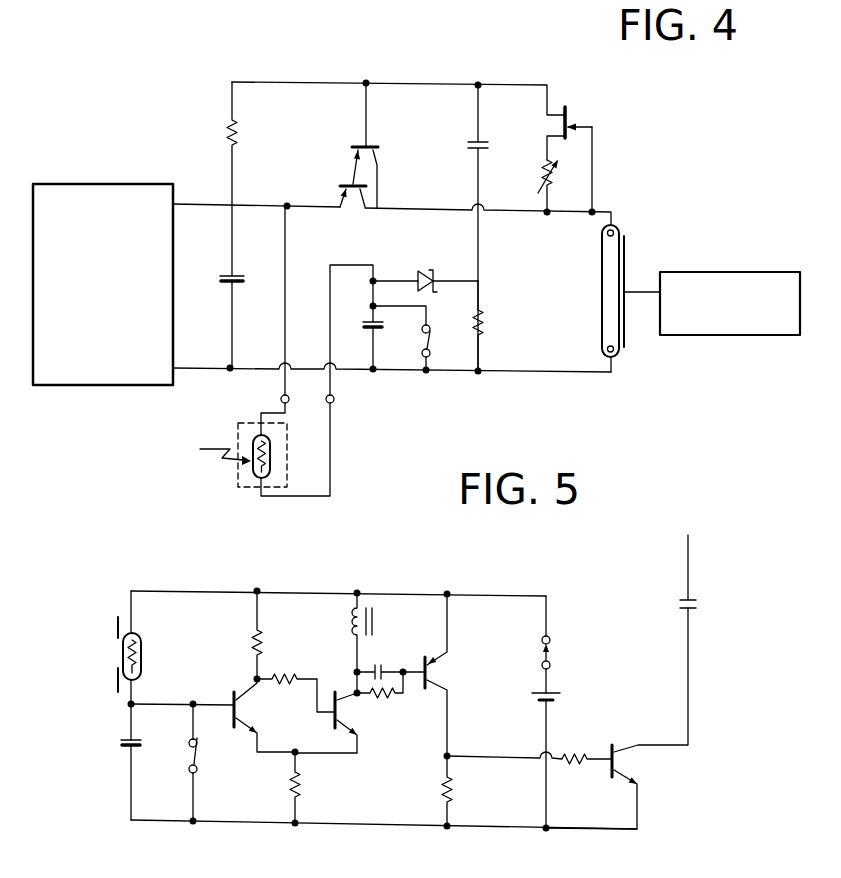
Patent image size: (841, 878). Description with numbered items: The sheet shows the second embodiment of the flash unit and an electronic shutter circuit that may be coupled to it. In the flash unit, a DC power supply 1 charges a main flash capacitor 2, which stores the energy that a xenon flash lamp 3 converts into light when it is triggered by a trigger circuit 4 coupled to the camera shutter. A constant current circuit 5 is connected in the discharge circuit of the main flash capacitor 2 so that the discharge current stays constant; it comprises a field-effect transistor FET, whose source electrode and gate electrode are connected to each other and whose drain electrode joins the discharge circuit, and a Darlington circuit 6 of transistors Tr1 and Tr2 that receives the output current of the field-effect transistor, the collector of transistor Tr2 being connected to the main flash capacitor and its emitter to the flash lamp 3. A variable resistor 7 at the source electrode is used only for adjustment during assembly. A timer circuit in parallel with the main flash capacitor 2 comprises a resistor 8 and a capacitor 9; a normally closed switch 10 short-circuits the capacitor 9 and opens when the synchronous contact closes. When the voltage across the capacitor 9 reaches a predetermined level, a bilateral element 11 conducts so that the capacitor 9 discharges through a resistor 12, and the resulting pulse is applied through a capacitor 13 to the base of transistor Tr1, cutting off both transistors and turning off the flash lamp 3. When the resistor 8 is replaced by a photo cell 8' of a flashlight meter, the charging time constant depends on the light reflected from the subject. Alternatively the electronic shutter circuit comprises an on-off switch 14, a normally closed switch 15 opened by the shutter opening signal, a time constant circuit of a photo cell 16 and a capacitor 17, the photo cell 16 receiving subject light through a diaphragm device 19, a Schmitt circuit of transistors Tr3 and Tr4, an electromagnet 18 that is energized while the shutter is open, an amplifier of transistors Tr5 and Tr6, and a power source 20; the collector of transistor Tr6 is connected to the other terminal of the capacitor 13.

In FIG. 4, the DC power supply 1 is at (91, 184).
In FIG. 4, the main flash capacitor 2 is at (218, 277).
In FIG. 4, the xenon-lamp 3 is at (616, 239).
In FIG. 4, the trigger circuit 4 is at (724, 272).
In FIG. 4, the constant current circuit 5 is at (243, 98).
In FIG. 4, the Darlington circuit 6 is at (356, 165).
In FIG. 4, the variable resistor 7 is at (540, 178).
In FIG. 4, the resistor 8 is at (267, 445).
In FIG. 4, the photo cell 8' is at (286, 465).
In FIG. 4, the capacitor 9 is at (370, 322).
In FIG. 4, the switch 10 is at (428, 331).
In FIG. 4, the bilateral element 11 is at (426, 269).
In FIG. 4, the resistor 12 is at (483, 320).
In FIG. 4, the capacitor 13 is at (468, 145).
In FIG. 5, the capacitor 13 is at (700, 604).
In FIG. 5, the on-off switch 14 is at (550, 656).
In FIG. 5, the normally closed switch 15 is at (202, 758).
In FIG. 5, the photo cell 16 is at (143, 647).
In FIG. 5, the capacitor 17 is at (117, 745).
In FIG. 5, the electromagnet 18 is at (358, 608).
In FIG. 5, the diaphragm device 19 is at (115, 628).
In FIG. 5, the power source 20 is at (561, 697).
In FIG. 4, the transistor Tr1 is at (351, 148).
In FIG. 4, the transistor Tr2 is at (345, 210).
In FIG. 5, the transistor Tr3 is at (237, 707).
In FIG. 5, the transistor Tr4 is at (339, 713).
In FIG. 5, the transistor Tr5 is at (430, 676).
In FIG. 5, the transistor Tr6 is at (617, 760).
In FIG. 4, the field-effect transistor FET is at (552, 108).